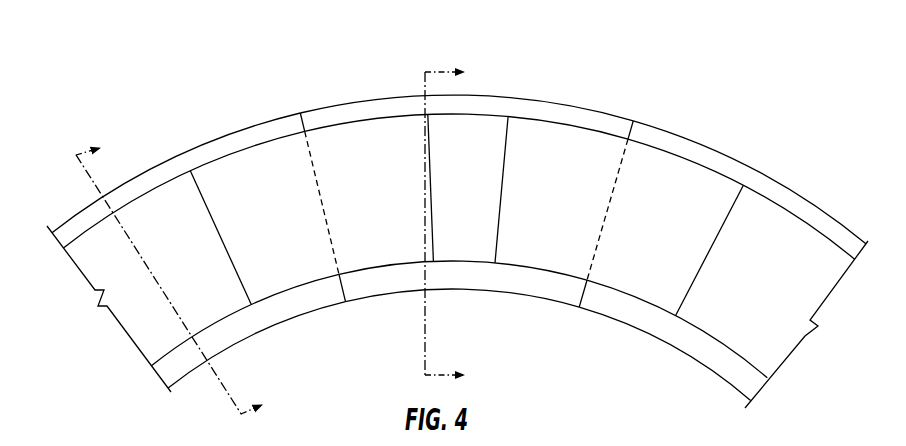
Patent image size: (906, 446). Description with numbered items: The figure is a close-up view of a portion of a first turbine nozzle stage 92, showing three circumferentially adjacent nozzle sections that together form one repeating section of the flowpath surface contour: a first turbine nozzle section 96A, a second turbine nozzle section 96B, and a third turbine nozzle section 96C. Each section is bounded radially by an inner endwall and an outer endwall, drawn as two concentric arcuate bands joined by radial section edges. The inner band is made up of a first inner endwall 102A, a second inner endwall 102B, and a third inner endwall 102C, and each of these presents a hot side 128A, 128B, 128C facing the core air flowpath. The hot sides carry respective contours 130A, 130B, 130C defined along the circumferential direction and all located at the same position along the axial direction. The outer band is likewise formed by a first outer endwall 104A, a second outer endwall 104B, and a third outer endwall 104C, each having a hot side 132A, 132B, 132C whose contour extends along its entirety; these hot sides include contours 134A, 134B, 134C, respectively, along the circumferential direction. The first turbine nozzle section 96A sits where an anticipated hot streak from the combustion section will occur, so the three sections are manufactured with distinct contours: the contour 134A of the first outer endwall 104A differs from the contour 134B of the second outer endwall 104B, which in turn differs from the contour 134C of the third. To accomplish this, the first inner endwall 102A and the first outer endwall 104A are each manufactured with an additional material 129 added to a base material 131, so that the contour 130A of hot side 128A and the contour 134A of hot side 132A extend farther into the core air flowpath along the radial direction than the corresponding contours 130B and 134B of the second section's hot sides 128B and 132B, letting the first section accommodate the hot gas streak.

The first turbine nozzle stage 92 is at (222, 46).
The first turbine nozzle section 96A is at (172, 142).
The second turbine nozzle section 96B is at (503, 62).
The third turbine nozzle section 96C is at (792, 171).
The first inner endwall 102A is at (203, 345).
The second inner endwall 102B is at (460, 278).
The third inner endwall 102C is at (700, 344).
The first outer endwall 104A is at (158, 174).
The second outer endwall 104B is at (353, 112).
The third outer endwall 104C is at (828, 230).
The hot side of first inner endwall 128A is at (162, 333).
The hot side of second inner endwall 128B is at (412, 254).
The hot side of third inner endwall 128C is at (748, 352).
The contour of first inner endwall hot side 130A is at (266, 275).
The contour of second inner endwall hot side 130B is at (521, 254).
The contour of third inner endwall hot side 130C is at (730, 346).
The hot side of first outer endwall 132A is at (108, 250).
The hot side of second outer endwall 132B is at (574, 128).
The hot side of third outer endwall 132C is at (815, 247).
The contour of first outer endwall hot side 134A is at (218, 182).
The contour of second outer endwall hot side 134B is at (520, 126).
The contour of third outer endwall hot side 134C is at (728, 191).
The additional material 129 is at (215, 165).
The base material 131 is at (198, 152).